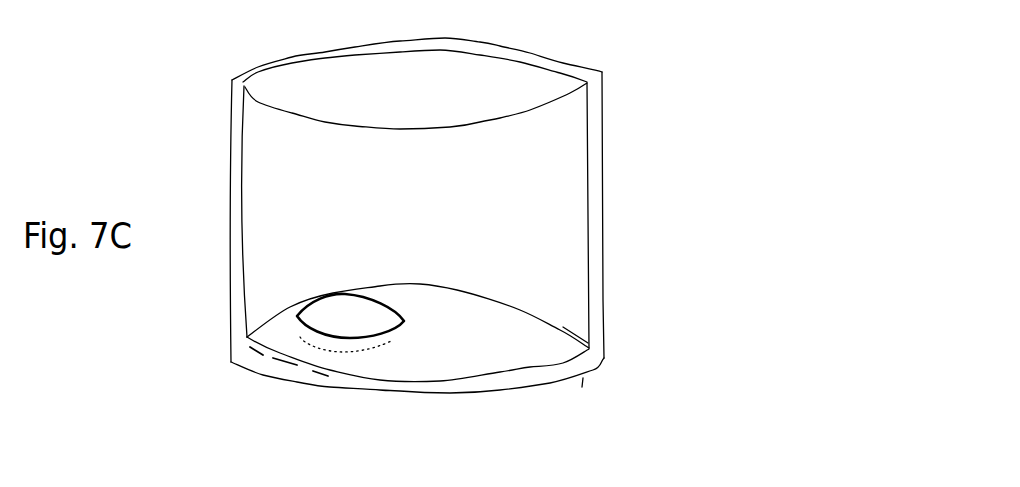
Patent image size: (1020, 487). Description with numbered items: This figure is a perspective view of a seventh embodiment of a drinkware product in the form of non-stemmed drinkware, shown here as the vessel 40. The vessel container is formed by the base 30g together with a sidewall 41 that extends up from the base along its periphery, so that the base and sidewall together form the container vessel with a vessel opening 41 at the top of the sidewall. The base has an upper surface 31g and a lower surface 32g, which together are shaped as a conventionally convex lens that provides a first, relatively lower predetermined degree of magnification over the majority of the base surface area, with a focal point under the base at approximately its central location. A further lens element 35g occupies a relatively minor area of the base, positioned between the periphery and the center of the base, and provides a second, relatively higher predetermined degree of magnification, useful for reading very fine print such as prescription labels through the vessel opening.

The container body / side wall 40 is at (598, 160).
The sidewall 41 is at (532, 83).
The base 30g is at (503, 357).
The upper surface 31g is at (550, 342).
The lower surface 32g is at (583, 378).
The lens element 35g is at (345, 318).